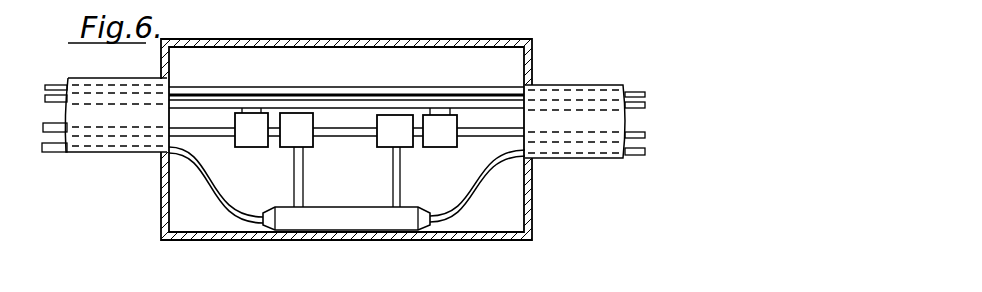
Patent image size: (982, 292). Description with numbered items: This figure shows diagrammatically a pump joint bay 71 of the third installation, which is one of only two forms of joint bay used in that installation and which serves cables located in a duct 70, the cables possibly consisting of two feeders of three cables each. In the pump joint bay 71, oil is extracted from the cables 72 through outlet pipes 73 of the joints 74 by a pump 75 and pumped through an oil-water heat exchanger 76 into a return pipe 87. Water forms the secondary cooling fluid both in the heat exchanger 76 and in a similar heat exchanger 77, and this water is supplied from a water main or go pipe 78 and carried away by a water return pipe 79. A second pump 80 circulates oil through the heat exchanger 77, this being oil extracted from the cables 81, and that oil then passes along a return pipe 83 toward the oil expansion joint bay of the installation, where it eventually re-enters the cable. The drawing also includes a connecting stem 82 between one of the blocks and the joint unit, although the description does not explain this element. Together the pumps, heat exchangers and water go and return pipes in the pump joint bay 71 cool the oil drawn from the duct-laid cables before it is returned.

The duct 70 is at (103, 78).
The pump joint bay 71 is at (222, 247).
The cables 72 is at (52, 151).
The outlet pipes 73 is at (306, 190).
The joints 74 is at (342, 225).
The pump 75 is at (295, 123).
The oil-water heat exchanger 76 is at (257, 134).
The heat exchanger 77 is at (433, 127).
The water main (go pipe) 78 is at (367, 92).
The water return pipe 79 is at (482, 105).
The pump 80 is at (385, 125).
The cables 81 is at (473, 203).
The connecting stem 82 is at (401, 183).
The return pipe 83 is at (628, 135).
The return pipe 87 is at (55, 128).